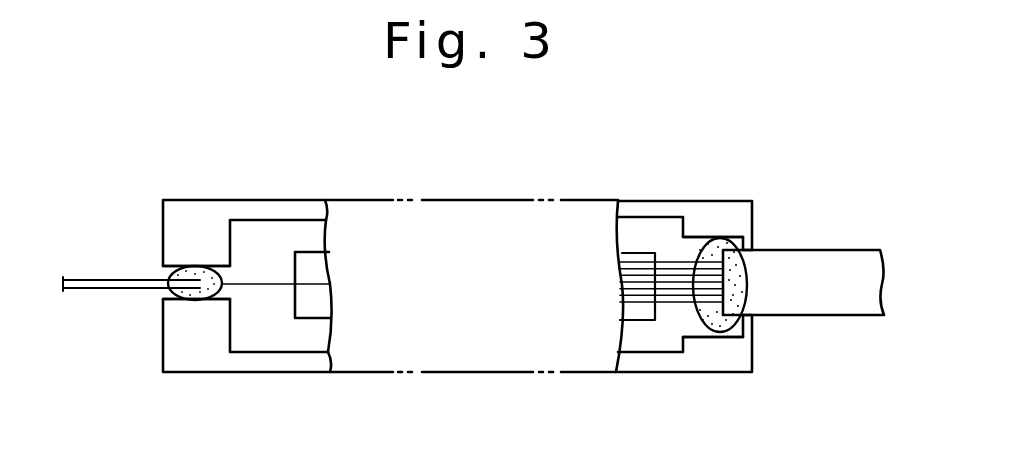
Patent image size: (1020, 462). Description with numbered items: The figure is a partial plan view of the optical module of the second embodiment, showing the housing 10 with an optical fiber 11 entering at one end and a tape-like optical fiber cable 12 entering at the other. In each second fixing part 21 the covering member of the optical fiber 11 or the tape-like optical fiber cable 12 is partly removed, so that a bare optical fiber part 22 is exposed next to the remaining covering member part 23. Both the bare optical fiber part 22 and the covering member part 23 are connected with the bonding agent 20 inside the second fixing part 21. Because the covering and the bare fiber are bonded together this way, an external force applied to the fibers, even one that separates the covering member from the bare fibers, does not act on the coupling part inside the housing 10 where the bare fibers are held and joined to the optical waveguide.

The housing 10 is at (303, 199).
The optical fiber 11 is at (110, 278).
The tape-like optical fiber cable 12 is at (820, 249).
The bonding agent 20 is at (205, 266).
The second fixing part 21 is at (190, 264).
The bare optical fiber part 22 is at (213, 301).
The covering member part 23 is at (190, 299).